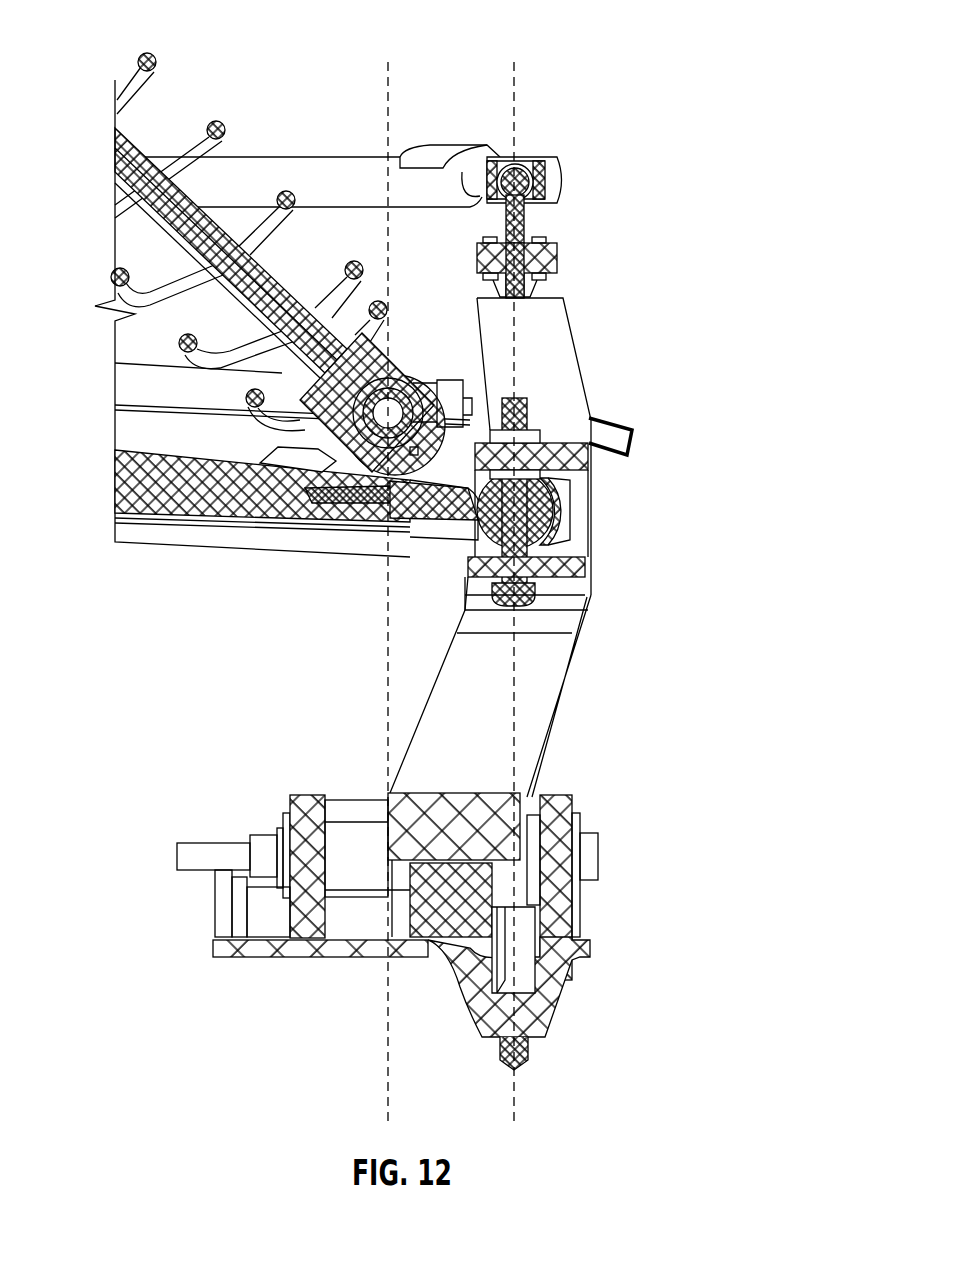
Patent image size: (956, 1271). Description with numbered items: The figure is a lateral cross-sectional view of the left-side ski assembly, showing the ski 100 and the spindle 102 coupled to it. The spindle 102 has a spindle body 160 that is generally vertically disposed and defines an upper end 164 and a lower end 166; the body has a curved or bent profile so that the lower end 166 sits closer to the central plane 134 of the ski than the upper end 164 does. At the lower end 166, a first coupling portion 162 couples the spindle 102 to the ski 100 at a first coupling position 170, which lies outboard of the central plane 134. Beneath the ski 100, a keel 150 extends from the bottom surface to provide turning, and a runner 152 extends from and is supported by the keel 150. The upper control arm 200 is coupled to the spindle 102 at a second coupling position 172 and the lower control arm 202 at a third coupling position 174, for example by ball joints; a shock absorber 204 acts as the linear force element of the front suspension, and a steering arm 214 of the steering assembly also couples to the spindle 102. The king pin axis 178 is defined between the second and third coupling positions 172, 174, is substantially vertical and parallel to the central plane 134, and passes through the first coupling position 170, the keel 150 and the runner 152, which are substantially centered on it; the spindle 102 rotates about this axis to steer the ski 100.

The ski 100 is at (609, 900).
The spindle 102 is at (588, 596).
The central plane 134 is at (391, 100).
The keel 150 is at (568, 990).
The runner 152 is at (533, 1055).
The spindle body 160 is at (577, 392).
The first coupling portion 162 is at (380, 752).
The upper end 164 is at (595, 301).
The lower end 166 is at (593, 688).
The first coupling position 170 is at (567, 780).
The second coupling position 172 is at (570, 169).
The third coupling position 174 is at (600, 507).
The king pin axis 178 is at (517, 100).
The upper control arm 200 is at (286, 157).
The lower control arm 202 is at (198, 540).
The shock absorber 204 is at (162, 151).
The steering arm 214 is at (130, 385).